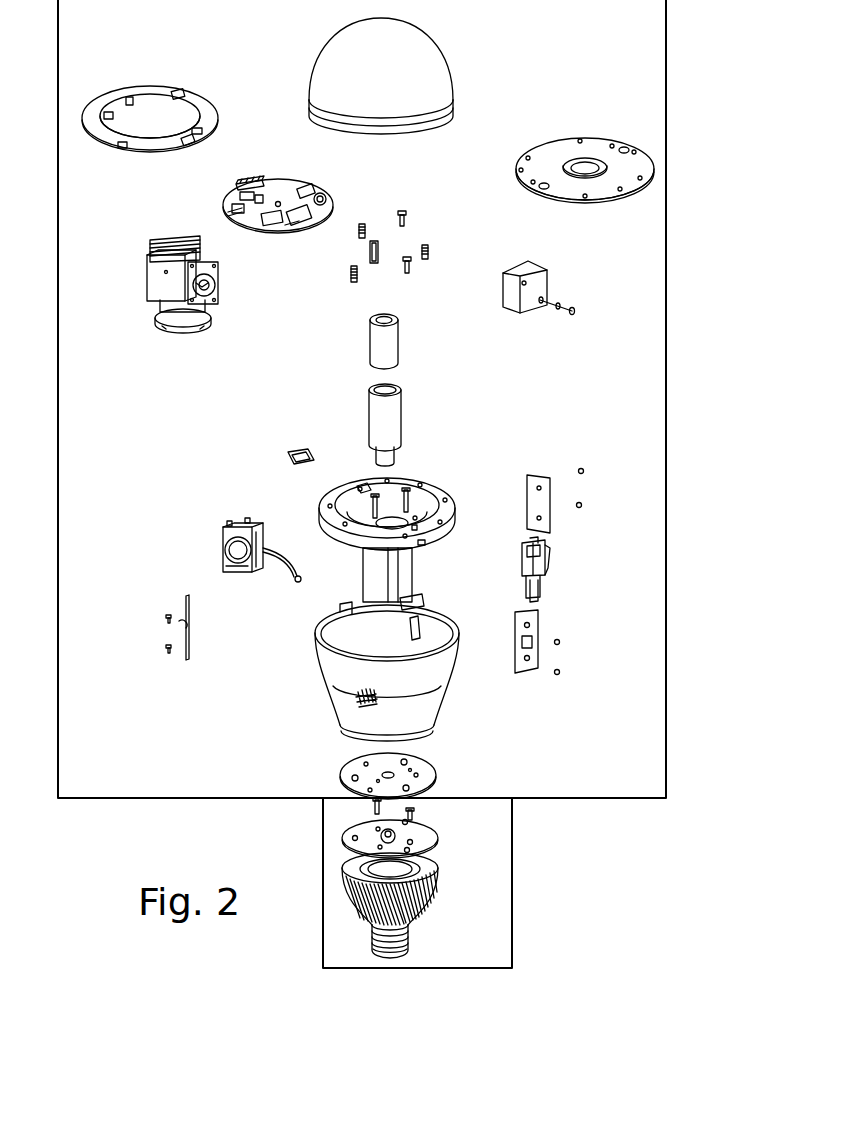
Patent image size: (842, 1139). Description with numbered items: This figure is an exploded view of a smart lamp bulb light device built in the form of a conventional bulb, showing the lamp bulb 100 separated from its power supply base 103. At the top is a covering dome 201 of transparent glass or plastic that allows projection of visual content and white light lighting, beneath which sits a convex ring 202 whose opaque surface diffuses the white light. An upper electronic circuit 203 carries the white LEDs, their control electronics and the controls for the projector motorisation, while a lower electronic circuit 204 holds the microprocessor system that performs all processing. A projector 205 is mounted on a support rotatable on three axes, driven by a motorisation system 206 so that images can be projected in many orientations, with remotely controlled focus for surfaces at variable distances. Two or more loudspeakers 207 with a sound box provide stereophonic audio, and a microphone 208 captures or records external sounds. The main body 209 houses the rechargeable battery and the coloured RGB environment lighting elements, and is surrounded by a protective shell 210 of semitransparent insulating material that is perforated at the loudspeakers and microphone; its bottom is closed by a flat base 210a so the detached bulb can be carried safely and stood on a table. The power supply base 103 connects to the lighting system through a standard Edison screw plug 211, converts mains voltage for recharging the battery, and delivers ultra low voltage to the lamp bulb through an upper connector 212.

The lamp bulb 100 is at (666, 452).
The power supply base 103 is at (512, 887).
The covering dome 201 is at (435, 88).
The convex ring 202 is at (150, 95).
The upper electronic circuit 203 is at (598, 150).
The lower electronic circuit 204 is at (276, 178).
The projector 205 is at (165, 265).
The motorisation system 206 is at (213, 283).
The loudspeakers 207 is at (226, 530).
The microphone 208 is at (296, 582).
The main body 209 is at (430, 487).
The protective shell 210 is at (345, 712).
The flat base 210a is at (343, 780).
The standard plug 211 is at (410, 935).
The connector 212 is at (397, 835).